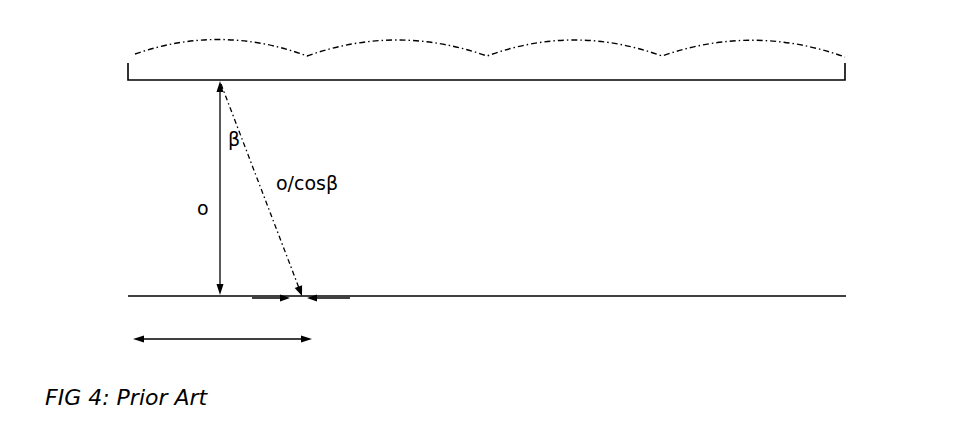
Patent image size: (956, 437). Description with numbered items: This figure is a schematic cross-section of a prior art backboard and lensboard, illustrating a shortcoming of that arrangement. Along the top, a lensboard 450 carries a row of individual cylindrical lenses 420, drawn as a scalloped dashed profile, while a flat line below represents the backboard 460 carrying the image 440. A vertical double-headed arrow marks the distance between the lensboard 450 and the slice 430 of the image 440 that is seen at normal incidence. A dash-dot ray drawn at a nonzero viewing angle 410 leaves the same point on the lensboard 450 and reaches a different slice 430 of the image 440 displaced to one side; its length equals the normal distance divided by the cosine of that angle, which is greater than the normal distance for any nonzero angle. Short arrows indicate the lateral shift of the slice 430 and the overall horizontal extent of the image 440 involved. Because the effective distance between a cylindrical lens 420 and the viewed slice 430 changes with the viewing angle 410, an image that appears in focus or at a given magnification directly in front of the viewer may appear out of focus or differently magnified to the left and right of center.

The viewing angle 410 is at (261, 190).
The cylindrical lens 420 is at (490, 37).
The slice of the image 430 is at (301, 312).
The image 440 is at (222, 352).
The lensboard 450 is at (456, 71).
The lower reference plane 460 is at (456, 290).